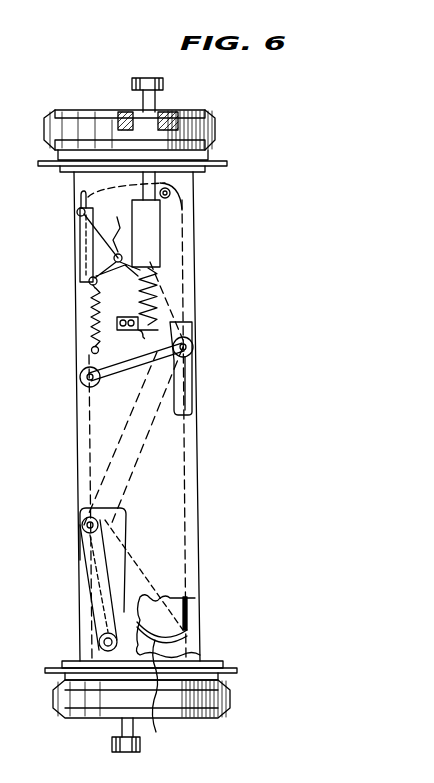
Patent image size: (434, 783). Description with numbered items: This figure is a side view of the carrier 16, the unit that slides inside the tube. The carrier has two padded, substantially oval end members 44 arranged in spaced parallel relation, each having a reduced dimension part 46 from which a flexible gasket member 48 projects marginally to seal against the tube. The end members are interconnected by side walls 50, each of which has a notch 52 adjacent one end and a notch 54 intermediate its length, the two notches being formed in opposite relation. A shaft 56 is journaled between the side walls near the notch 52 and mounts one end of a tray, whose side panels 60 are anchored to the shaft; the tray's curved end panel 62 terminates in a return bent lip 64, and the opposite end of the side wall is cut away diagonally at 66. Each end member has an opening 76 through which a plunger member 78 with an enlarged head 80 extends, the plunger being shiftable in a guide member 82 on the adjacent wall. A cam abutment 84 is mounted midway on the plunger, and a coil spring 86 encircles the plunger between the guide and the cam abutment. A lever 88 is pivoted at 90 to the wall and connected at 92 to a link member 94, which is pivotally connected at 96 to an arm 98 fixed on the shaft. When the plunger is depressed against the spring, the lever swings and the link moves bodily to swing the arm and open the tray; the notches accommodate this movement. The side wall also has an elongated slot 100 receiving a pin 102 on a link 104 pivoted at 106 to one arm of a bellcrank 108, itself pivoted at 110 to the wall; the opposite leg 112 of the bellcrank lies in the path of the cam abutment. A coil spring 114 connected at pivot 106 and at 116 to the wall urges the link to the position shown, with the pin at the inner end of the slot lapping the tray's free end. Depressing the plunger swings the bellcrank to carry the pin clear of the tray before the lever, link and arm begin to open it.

The carrier 16 is at (68, 441).
The end member 44 is at (55, 135).
The reduced dimension part 46 is at (222, 667).
The gasket member 48 is at (227, 165).
The side wall 50 is at (175, 471).
The notch 52 is at (120, 520).
The notch 54 is at (192, 405).
The shaft 56 is at (170, 193).
The side panel 60 is at (156, 722).
The end panel 62 is at (160, 605).
The return bent lip 64 is at (182, 636).
The diagonal cut-away 66 is at (192, 603).
The opening 76 is at (160, 112).
The plunger member 78 is at (143, 100).
The enlarged head 80 is at (153, 62).
The guide member 82 is at (138, 332).
The cam abutment 84 is at (160, 226).
The coil spring 86 is at (160, 282).
The lever 88 is at (125, 372).
The pivot 90 is at (80, 377).
The pivot 92 is at (193, 347).
The link member 94 is at (140, 445).
The pivot 96 is at (82, 525).
The arm 98 is at (100, 575).
The slot 100 is at (80, 196).
The pin 102 is at (77, 212).
The link 104 is at (80, 232).
The pivot 106 is at (89, 281).
The bellcrank 108 is at (88, 265).
The pivot 110 is at (123, 224).
The leg 112 is at (118, 263).
The coil spring 114 is at (93, 323).
The spring connection 116 is at (91, 350).